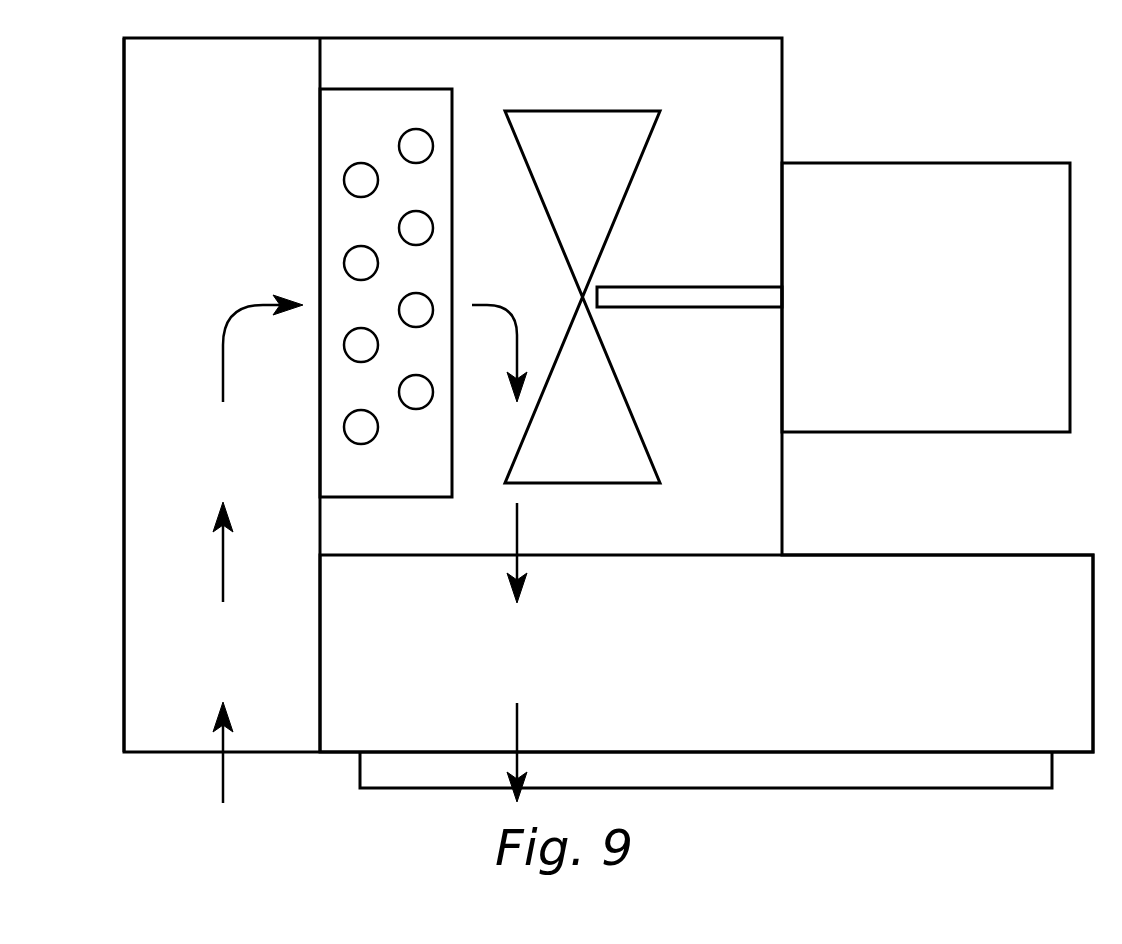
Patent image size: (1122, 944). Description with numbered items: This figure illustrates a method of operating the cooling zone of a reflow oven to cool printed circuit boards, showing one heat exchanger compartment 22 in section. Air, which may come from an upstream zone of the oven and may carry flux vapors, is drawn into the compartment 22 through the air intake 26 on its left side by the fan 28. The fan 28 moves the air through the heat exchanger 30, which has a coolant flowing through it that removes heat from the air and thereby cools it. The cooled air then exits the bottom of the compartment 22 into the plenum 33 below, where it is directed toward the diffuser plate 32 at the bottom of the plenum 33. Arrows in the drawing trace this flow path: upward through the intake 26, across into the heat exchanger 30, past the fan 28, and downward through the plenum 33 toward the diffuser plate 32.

The heat exchanger compartment 22 is at (772, 87).
The intake 26 is at (133, 337).
The fan 28 is at (605, 228).
The heat exchanger 30 is at (435, 116).
The diffuser plate 32 is at (797, 772).
The plenum 33 is at (907, 577).